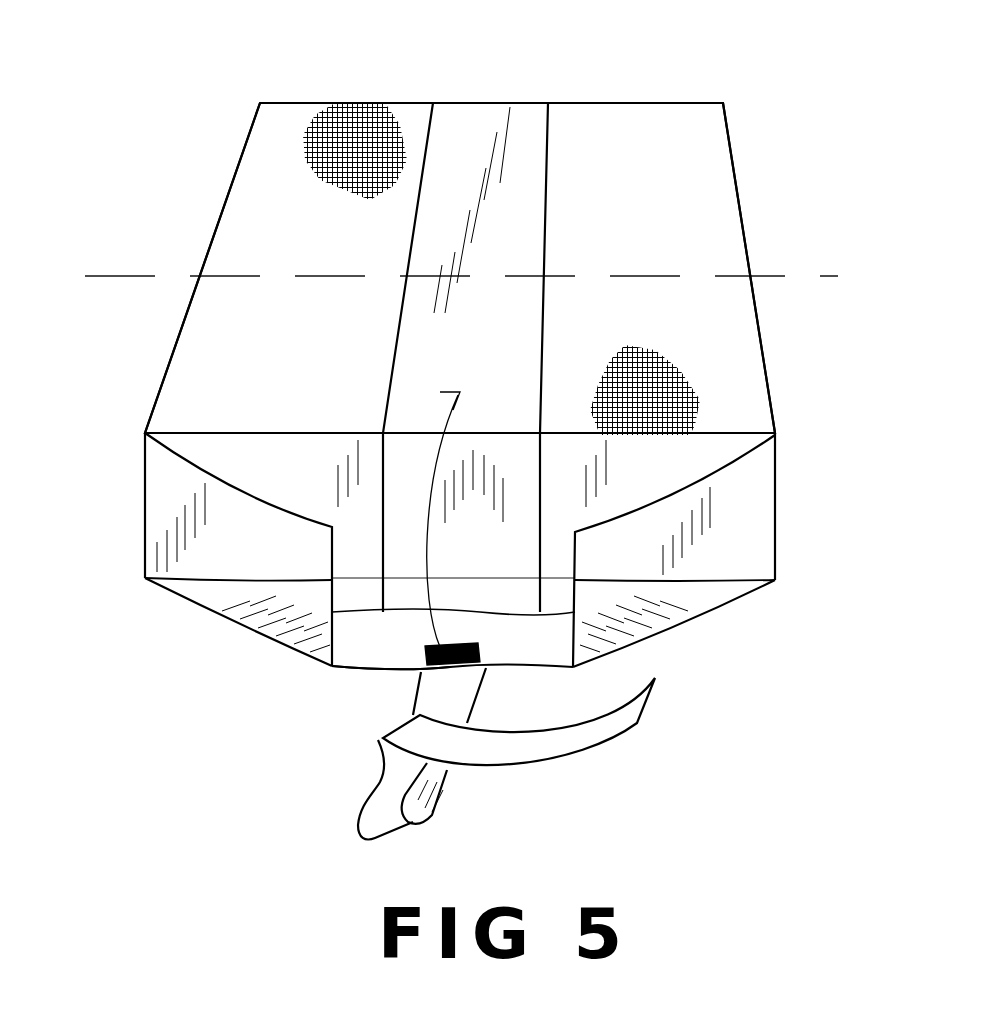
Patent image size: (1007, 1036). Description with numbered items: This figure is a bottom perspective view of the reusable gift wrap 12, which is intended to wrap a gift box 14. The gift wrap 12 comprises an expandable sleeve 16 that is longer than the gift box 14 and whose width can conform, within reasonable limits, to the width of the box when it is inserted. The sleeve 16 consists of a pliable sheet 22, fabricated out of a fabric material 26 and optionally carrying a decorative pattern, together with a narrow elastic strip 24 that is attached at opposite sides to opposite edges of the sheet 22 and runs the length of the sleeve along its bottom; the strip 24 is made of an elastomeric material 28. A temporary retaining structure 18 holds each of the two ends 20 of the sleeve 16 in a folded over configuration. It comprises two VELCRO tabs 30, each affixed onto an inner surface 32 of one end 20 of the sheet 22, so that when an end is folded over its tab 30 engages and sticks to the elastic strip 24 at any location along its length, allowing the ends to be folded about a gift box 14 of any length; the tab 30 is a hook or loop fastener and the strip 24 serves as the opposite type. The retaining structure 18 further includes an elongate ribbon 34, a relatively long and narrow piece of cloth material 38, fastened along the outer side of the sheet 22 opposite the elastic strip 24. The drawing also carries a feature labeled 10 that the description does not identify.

The section line 10 is at (115, 302).
The reusable gift wrap 12 is at (805, 195).
The gift box 14 is at (242, 222).
The expandable sleeve 16 is at (737, 156).
The temporary retaining structure 18 is at (483, 648).
The ends 20 is at (347, 670).
The pliable sheet 22 is at (258, 135).
The narrow elastic strip 24 is at (532, 115).
The fabric material 26 is at (667, 115).
The elastomeric material 28 is at (457, 120).
The VELCRO tab 30 is at (453, 640).
The inner surface 32 is at (405, 650).
The elongate ribbon 34 is at (567, 750).
The cloth material 38 is at (378, 818).